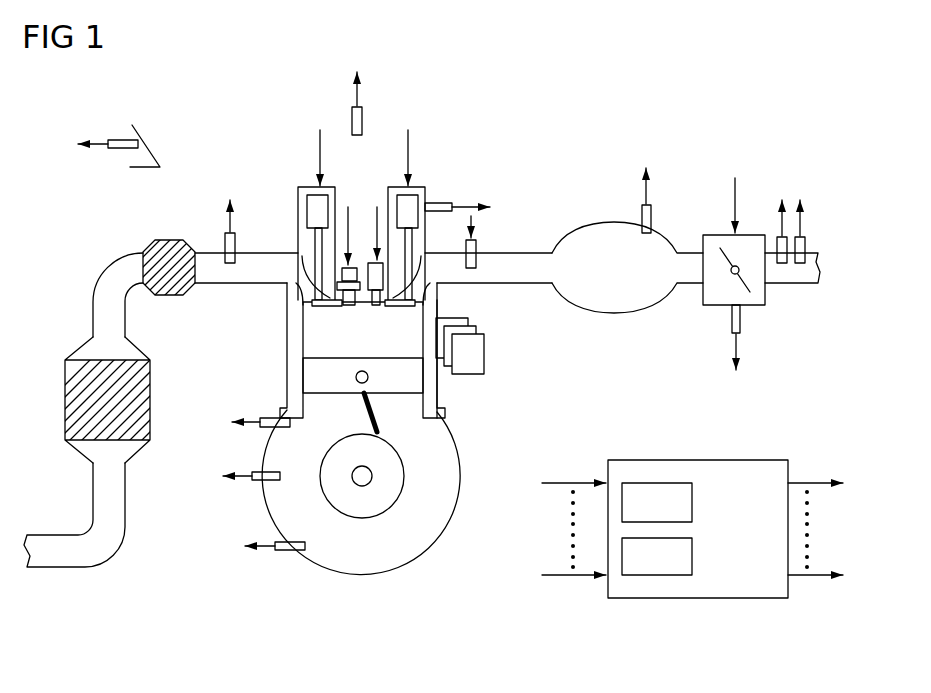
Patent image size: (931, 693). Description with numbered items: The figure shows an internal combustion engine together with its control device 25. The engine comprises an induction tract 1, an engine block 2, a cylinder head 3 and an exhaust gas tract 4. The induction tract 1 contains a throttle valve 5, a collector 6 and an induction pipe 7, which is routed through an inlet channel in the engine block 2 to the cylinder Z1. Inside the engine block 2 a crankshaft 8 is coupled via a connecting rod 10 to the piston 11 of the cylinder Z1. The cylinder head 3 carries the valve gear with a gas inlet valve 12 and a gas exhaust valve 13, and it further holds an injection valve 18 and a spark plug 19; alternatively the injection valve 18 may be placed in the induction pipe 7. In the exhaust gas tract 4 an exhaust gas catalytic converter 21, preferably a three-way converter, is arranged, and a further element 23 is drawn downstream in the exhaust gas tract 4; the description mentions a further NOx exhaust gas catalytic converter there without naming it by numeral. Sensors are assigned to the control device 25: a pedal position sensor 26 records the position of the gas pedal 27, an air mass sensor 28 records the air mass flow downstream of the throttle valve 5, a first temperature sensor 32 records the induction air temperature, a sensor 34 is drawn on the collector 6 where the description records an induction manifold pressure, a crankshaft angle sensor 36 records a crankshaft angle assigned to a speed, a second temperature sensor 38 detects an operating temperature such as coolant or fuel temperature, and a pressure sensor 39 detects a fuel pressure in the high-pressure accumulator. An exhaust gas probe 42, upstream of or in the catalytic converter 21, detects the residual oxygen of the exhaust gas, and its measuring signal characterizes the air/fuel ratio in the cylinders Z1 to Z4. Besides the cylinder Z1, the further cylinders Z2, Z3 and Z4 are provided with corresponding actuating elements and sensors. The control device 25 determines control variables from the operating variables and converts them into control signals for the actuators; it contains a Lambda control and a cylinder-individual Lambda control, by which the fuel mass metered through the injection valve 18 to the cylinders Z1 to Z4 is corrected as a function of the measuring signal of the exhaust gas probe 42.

The induction tract 1 is at (644, 324).
The engine block 2 is at (266, 334).
The cylinder head 3 is at (430, 156).
The exhaust gas tract 4 is at (96, 266).
The throttle valve 5 is at (715, 240).
The collector 6 is at (655, 300).
The induction pipe 7 is at (531, 262).
The crankshaft 8 is at (372, 478).
The connecting rod 10 is at (372, 420).
The piston 11 is at (393, 385).
The gas inlet valve 12 is at (407, 307).
The gas exhaust valve 13 is at (290, 311).
The injection valve 18 is at (374, 307).
The spark plug 19 is at (345, 306).
The exhaust gas catalytic converter 21 is at (162, 293).
The exhaust catalyst 23 is at (140, 397).
The control device 25 is at (723, 462).
The pedal position sensor 26 is at (117, 140).
The gas pedal 27 is at (150, 138).
The air mass sensor 28 is at (777, 240).
The first temperature sensor 32 is at (806, 242).
The mass air flow sensor 34 is at (640, 212).
The crankshaft angle sensor 36 is at (260, 480).
The second temperature sensor 38 is at (265, 418).
The pressure sensor 39 is at (364, 120).
The exhaust gas probe 42 is at (237, 246).
The cylinder Z1 is at (428, 378).
The cylinder Z2 is at (478, 353).
The cylinder Z3 is at (477, 328).
The cylinder Z4 is at (470, 318).